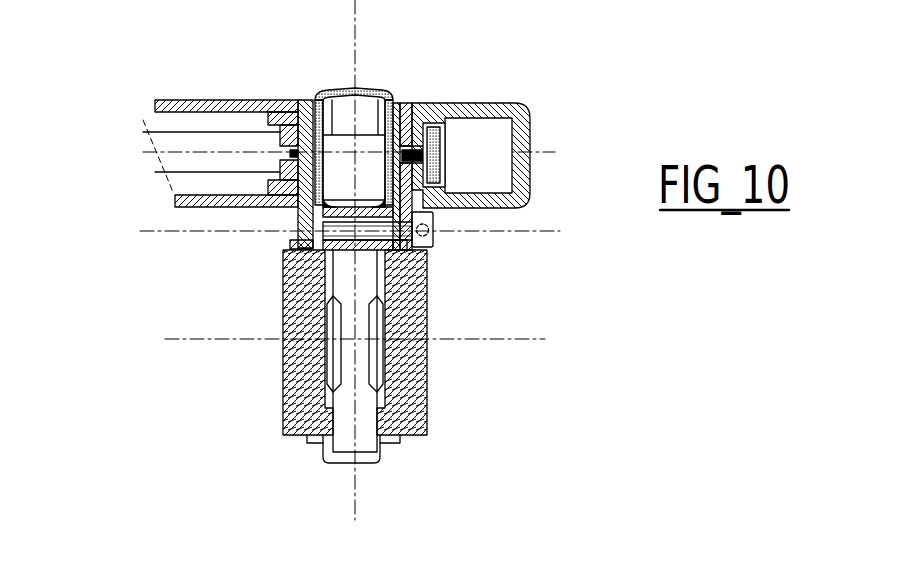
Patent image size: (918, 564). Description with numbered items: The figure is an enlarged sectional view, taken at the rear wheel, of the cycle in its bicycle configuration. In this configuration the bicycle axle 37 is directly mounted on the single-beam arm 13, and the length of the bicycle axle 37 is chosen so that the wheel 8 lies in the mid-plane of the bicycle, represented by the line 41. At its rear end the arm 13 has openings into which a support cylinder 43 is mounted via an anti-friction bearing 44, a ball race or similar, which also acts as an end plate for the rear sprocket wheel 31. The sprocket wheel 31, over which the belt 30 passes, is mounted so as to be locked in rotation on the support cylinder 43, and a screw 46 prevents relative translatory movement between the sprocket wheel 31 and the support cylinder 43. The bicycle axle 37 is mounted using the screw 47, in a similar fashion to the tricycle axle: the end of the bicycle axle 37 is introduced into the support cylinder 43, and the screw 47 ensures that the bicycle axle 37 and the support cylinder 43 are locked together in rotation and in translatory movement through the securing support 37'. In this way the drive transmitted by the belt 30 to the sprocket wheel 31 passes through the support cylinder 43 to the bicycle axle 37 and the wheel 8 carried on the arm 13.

The wheel 8 is at (290, 395).
The single-beam arm 13 is at (172, 104).
The belt 30 is at (150, 130).
The rear sprocket wheel 31 is at (296, 137).
The bicycle axle 37 is at (413, 135).
The securing support 37' is at (245, 269).
The mid-plane line 41 is at (172, 340).
The support cylinder 43 is at (318, 97).
The anti-friction bearing 44 is at (423, 102).
The screw 46 is at (433, 208).
The screw 47 is at (427, 243).